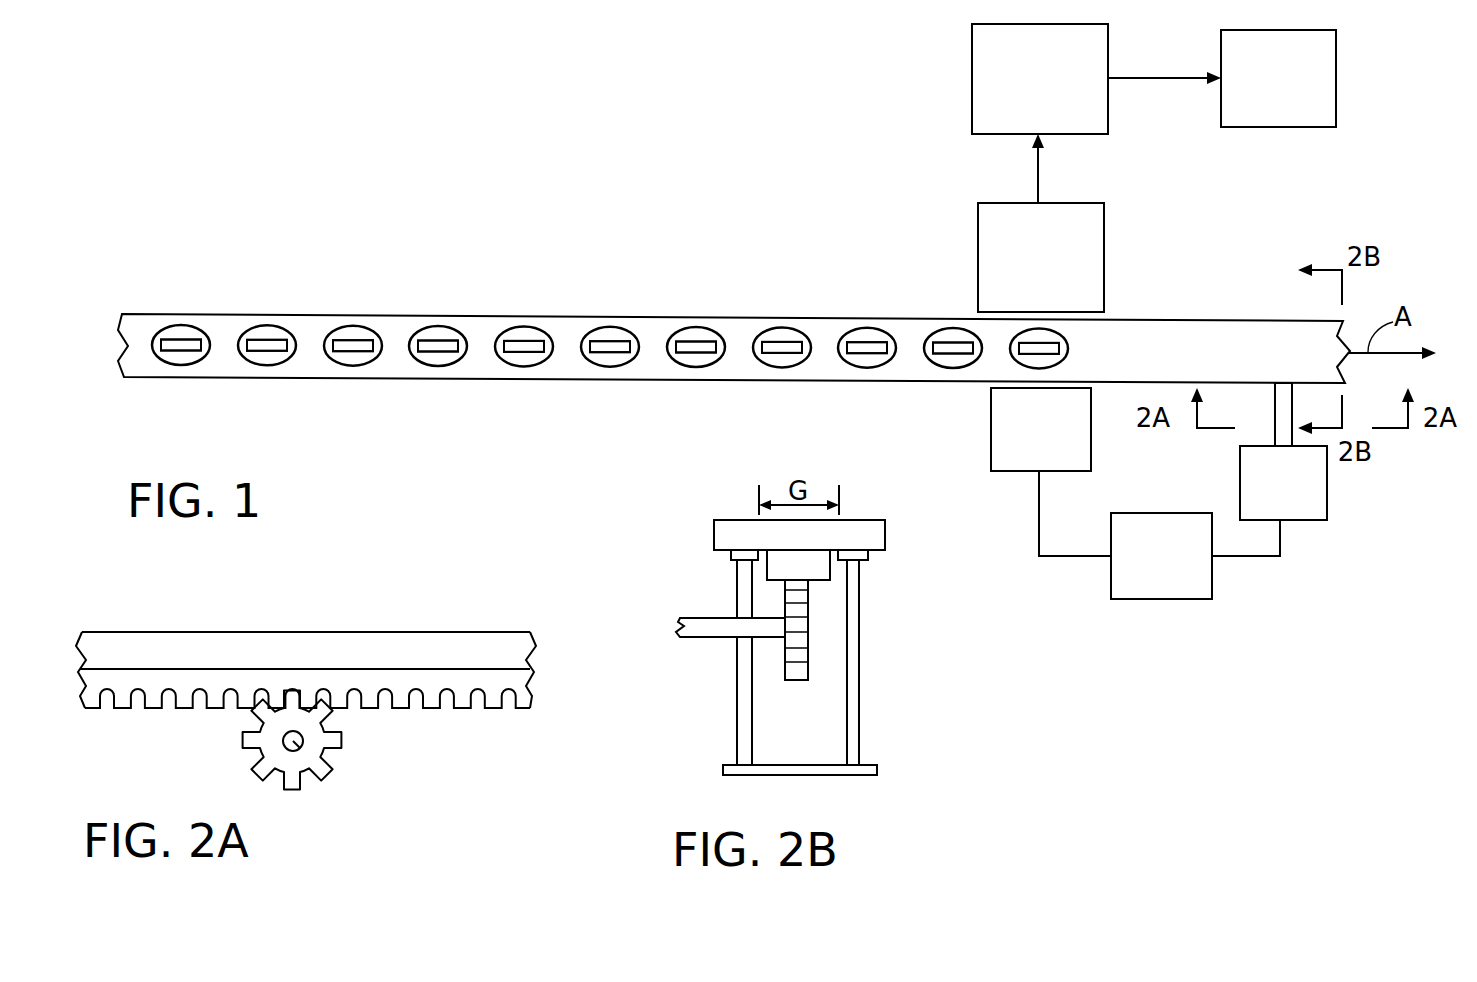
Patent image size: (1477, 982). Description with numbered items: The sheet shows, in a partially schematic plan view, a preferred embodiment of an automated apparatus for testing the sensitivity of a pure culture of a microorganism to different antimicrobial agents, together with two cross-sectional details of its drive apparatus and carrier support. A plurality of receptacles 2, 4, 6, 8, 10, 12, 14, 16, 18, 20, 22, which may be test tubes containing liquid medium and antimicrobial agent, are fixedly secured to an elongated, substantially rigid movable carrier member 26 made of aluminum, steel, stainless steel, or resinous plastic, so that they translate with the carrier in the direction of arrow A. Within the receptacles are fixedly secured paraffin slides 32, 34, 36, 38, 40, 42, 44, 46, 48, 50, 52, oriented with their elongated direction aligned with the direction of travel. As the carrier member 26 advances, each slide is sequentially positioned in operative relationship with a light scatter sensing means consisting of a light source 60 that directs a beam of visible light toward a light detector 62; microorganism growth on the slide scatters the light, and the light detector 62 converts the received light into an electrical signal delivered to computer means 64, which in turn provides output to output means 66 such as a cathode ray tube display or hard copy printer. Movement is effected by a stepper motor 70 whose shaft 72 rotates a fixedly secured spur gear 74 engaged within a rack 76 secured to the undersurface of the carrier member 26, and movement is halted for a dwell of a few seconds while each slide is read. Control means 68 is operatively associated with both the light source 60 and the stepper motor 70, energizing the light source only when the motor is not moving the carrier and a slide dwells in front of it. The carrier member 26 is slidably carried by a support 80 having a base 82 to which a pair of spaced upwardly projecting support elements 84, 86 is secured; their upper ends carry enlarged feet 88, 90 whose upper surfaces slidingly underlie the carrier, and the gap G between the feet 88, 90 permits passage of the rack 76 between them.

In FIG. 1, the receptacle 2 is at (1025, 366).
In FIG. 1, the receptacle 4 is at (938, 365).
In FIG. 1, the receptacle 6 is at (850, 365).
In FIG. 1, the receptacle 8 is at (767, 363).
In FIG. 1, the receptacle 10 is at (698, 328).
In FIG. 1, the receptacle 12 is at (600, 365).
In FIG. 1, the receptacle 14 is at (515, 332).
In FIG. 1, the receptacle 16 is at (433, 335).
In FIG. 1, the receptacle 18 is at (338, 352).
In FIG. 1, the receptacle 20 is at (268, 340).
In FIG. 1, the receptacle 22 is at (184, 340).
In FIG. 1, the carrier member 26 is at (1215, 333).
In FIG. 2A, the carrier member 26 is at (306, 678).
In FIG. 2B, the carrier member 26 is at (877, 535).
In FIG. 1, the slide 32 is at (1044, 354).
In FIG. 1, the slide 34 is at (958, 340).
In FIG. 1, the slide 36 is at (875, 340).
In FIG. 1, the slide 38 is at (790, 342).
In FIG. 1, the slide 40 is at (698, 352).
In FIG. 1, the slide 42 is at (617, 340).
In FIG. 1, the slide 44 is at (535, 340).
In FIG. 1, the slide 46 is at (432, 352).
In FIG. 1, the slide 48 is at (345, 340).
In FIG. 1, the slide 50 is at (267, 350).
In FIG. 1, the slide 52 is at (188, 350).
In FIG. 1, the light source 60 is at (991, 443).
In FIG. 1, the light detector 62 is at (1090, 204).
In FIG. 1, the computer means 64 is at (975, 92).
In FIG. 1, the output means 66 is at (1293, 92).
In FIG. 1, the control means 68 is at (1135, 596).
In FIG. 1, the stepper motor 70 is at (1306, 520).
In FIG. 1, the shaft 72 is at (1268, 425).
In FIG. 2A, the shaft 72 is at (302, 748).
In FIG. 2B, the shaft 72 is at (713, 637).
In FIG. 2A, the spur gear 74 is at (248, 750).
In FIG. 2B, the spur gear 74 is at (805, 630).
In FIG. 2A, the rack 76 is at (430, 702).
In FIG. 2B, the rack 76 is at (820, 580).
In FIG. 2B, the support 80 is at (712, 735).
In FIG. 2B, the base 82 is at (868, 767).
In FIG. 2B, the support element 84 is at (857, 688).
In FIG. 2B, the support element 86 is at (748, 725).
In FIG. 2B, the foot 88 is at (730, 558).
In FIG. 2B, the foot 90 is at (865, 553).